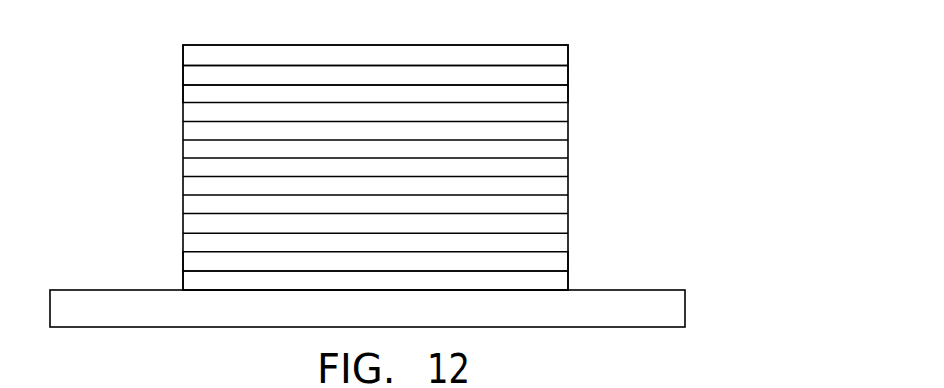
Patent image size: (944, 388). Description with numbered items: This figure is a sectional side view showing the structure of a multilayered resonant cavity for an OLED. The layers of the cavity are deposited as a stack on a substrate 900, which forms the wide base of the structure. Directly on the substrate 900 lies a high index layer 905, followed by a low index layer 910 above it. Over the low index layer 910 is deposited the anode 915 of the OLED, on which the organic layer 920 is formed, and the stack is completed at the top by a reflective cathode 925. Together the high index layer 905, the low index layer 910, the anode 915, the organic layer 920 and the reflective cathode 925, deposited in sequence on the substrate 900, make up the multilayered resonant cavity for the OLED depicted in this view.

The substrate 900 is at (667, 309).
The high index layer 905 is at (560, 280).
The low index layer 910 is at (560, 262).
The anode 915 is at (558, 90).
The organic layer 920 is at (558, 72).
The reflective cathode 925 is at (559, 55).